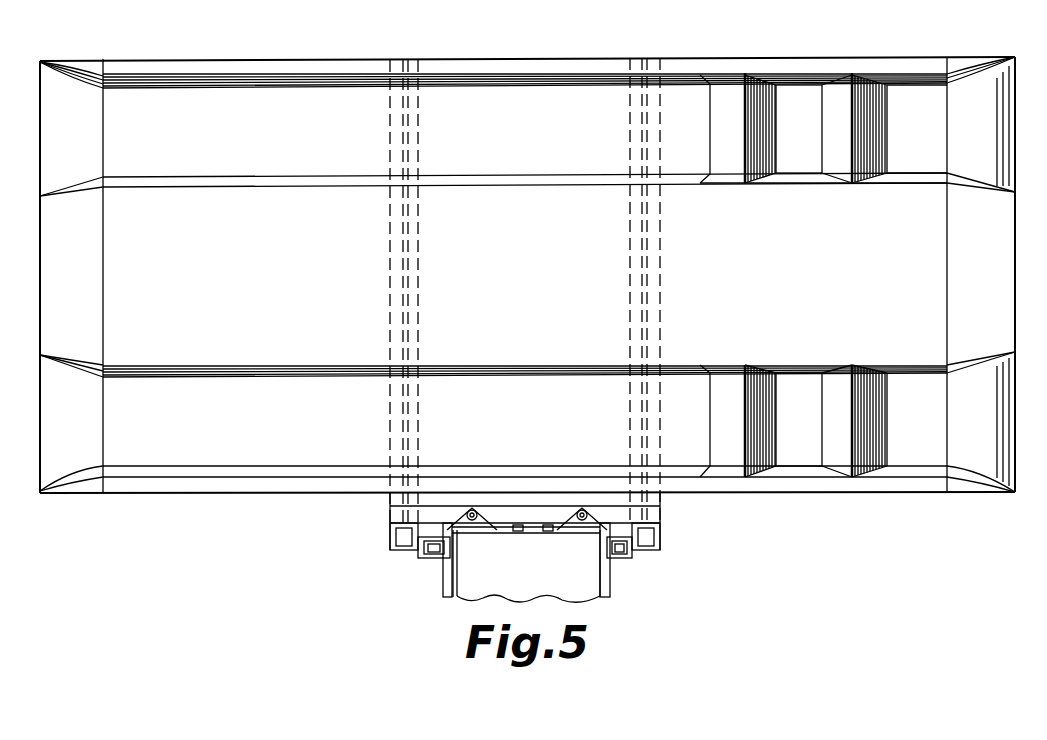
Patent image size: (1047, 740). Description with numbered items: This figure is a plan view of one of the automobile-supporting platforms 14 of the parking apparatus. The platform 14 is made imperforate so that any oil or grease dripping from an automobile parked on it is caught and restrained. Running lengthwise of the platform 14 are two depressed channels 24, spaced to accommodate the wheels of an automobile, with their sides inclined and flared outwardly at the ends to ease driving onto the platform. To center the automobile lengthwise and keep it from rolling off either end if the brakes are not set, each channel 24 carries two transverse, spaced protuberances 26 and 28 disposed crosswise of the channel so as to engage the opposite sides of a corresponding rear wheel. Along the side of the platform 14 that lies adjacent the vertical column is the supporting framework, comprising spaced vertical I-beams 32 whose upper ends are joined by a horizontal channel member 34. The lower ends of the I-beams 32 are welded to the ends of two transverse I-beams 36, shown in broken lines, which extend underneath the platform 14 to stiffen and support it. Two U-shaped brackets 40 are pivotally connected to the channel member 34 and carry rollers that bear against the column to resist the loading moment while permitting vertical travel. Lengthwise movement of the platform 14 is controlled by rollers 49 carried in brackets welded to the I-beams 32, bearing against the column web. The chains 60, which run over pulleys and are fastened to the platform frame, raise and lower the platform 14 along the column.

The automobile-supporting platform 14 is at (333, 286).
The depressed channel 24 is at (258, 110).
The transverse protuberance 26 is at (722, 136).
The transverse protuberance 28 is at (878, 151).
The I-beam 32 is at (390, 540).
The horizontal channel member 34 is at (662, 511).
The transverse I-beam 36 is at (412, 442).
The U-shaped bracket 40 is at (582, 512).
The roller 49 is at (435, 558).
The chain 60 is at (526, 562).